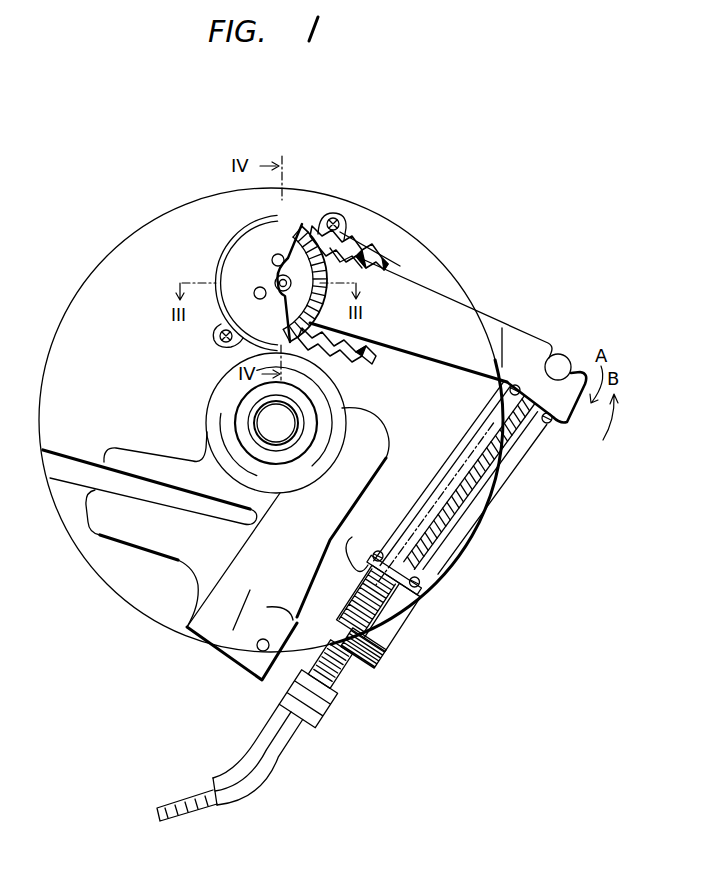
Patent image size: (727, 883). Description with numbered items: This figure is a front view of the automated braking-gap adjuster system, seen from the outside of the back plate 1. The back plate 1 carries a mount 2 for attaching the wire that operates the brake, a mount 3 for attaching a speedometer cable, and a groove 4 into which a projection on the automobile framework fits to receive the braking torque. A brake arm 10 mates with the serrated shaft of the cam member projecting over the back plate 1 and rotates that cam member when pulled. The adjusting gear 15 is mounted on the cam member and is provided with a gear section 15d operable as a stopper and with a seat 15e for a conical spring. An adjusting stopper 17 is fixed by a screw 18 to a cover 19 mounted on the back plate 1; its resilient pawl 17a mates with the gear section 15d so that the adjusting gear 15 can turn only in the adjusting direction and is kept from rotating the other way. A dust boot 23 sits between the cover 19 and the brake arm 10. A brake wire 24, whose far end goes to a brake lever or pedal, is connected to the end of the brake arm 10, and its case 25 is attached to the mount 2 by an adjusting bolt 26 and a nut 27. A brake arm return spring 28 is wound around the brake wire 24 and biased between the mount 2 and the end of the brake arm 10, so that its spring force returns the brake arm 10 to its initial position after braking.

The back plate 1 is at (96, 312).
The mount 2 is at (393, 628).
The mount 3 is at (213, 627).
The groove 4 is at (76, 472).
The brake arm 10 is at (449, 312).
The adjusting gear 15 is at (348, 268).
The gear section 15d is at (228, 328).
The seat 15e is at (278, 283).
The adjusting stopper 17 is at (278, 268).
The resilient pawl 17a is at (290, 230).
The screw 18 is at (338, 214).
The cover 19 is at (291, 222).
The dust boot 23 is at (351, 268).
The brake wire 24 is at (453, 527).
The case 25 is at (262, 750).
The adjusting bolt 26 is at (322, 712).
The nut 27 is at (371, 652).
The brake arm return spring 28 is at (531, 452).